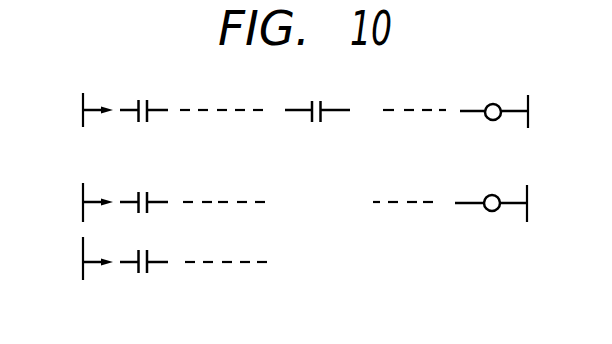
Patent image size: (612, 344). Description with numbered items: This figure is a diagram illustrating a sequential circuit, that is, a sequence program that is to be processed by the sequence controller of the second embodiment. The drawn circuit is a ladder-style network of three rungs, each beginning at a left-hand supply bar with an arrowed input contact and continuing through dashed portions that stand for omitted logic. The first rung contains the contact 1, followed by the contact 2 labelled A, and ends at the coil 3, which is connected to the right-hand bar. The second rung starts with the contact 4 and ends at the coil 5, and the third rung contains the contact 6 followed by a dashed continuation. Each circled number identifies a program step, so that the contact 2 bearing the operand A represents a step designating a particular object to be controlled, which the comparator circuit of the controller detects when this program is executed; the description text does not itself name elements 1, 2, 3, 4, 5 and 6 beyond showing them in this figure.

The normally open input contact 1 is at (125, 97).
The contact A 2 is at (316, 95).
The output relay coil 3 is at (494, 99).
The normally open input contact 4 is at (125, 193).
The output relay coil 5 is at (491, 193).
The normally open input contact 6 is at (125, 253).